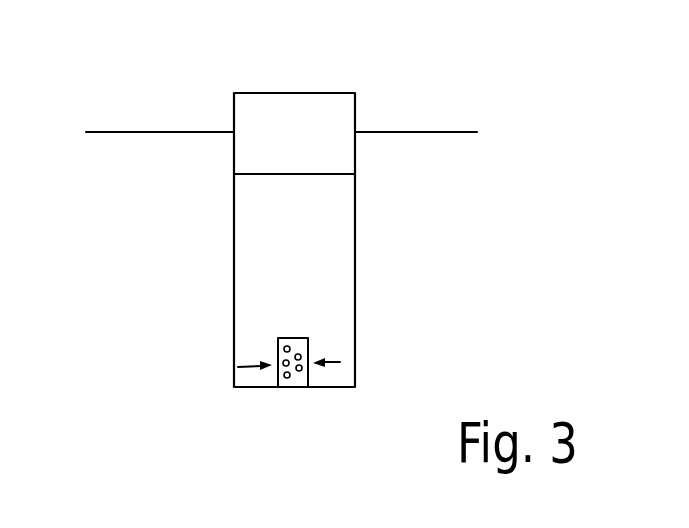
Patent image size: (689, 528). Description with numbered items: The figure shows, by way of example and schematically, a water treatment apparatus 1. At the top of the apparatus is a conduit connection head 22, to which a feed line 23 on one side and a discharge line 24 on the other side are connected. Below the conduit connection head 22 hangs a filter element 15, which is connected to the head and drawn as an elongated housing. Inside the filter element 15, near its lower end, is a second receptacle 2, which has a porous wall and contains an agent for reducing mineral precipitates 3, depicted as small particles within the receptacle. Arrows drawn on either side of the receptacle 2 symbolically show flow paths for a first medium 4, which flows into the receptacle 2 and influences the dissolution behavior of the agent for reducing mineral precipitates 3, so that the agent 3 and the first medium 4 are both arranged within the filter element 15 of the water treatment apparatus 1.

The water treatment apparatus 1 is at (490, 273).
The second receptacle 2 is at (288, 400).
The agent for reducing mineral precipitates 3 is at (283, 344).
The first medium 4 is at (244, 362).
The filter element 15 is at (440, 233).
The conduit connection head 22 is at (338, 114).
The feed line 23 is at (156, 132).
The discharge line 24 is at (433, 132).